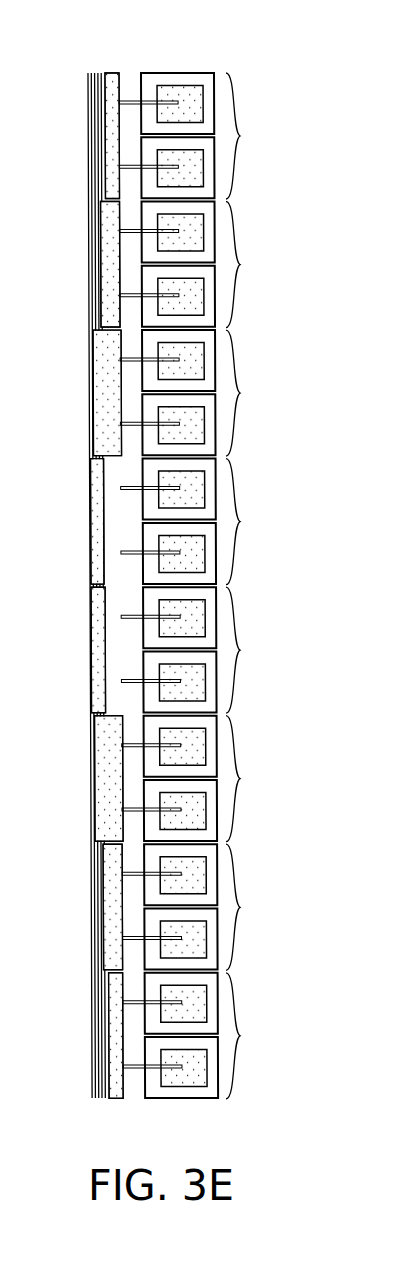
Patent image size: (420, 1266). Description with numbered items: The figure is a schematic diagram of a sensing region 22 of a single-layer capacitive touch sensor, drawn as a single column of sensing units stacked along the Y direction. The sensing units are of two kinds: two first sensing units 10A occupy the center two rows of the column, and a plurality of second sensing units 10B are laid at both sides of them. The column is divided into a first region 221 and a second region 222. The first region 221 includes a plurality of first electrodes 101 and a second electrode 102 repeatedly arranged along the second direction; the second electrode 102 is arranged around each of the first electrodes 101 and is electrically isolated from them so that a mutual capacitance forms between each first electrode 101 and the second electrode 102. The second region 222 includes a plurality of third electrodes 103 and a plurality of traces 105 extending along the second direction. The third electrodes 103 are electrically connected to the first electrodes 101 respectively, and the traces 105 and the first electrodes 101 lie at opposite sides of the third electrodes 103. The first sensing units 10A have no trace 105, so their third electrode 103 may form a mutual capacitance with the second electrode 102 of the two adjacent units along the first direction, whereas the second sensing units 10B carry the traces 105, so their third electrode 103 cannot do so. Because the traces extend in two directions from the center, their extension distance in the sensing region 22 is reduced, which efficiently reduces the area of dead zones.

The sensing region 22 is at (63, 68).
The first electrode 101 is at (182, 586).
The second electrode 102 is at (179, 585).
The third electrode 103 is at (106, 585).
The trace 105 is at (96, 585).
The first sensing unit 10A is at (265, 586).
The second sensing unit 10B is at (265, 586).
The first region 221 is at (179, 585).
The second region 222 is at (135, 585).